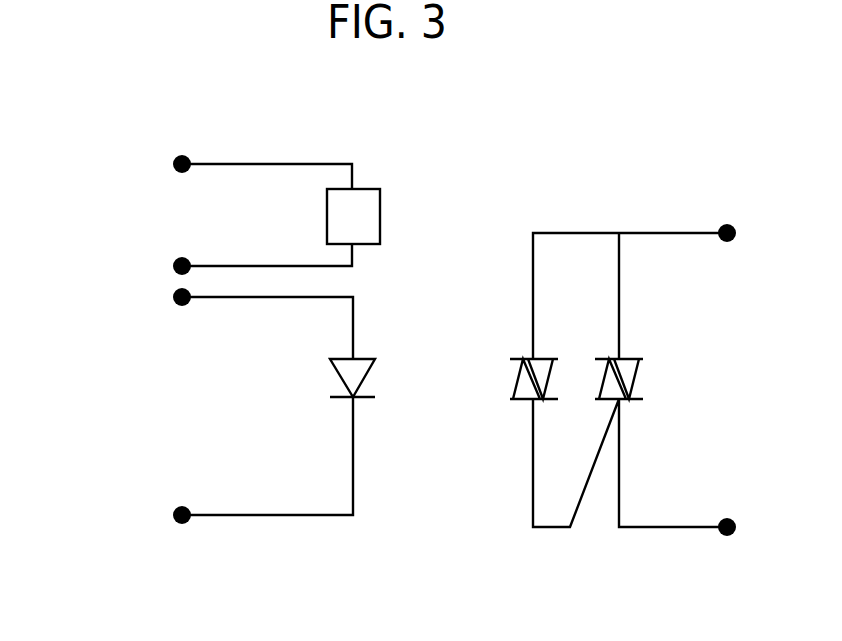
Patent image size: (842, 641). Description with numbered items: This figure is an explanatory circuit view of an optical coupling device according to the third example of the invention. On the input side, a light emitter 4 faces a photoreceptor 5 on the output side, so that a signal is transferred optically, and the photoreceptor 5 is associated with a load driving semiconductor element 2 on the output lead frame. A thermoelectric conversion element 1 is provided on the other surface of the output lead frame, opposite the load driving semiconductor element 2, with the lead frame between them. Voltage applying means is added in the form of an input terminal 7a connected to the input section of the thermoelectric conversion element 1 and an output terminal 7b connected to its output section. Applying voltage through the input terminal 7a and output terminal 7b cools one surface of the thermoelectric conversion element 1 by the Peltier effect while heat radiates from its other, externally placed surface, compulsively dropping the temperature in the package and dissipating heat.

The thermoelectric conversion element 1 is at (380, 210).
The load driving semiconductor element 2 is at (630, 359).
The light emitter 4 is at (337, 357).
The photoreceptor 5 is at (545, 359).
The input terminal 7a is at (175, 160).
The output terminal 7b is at (175, 262).